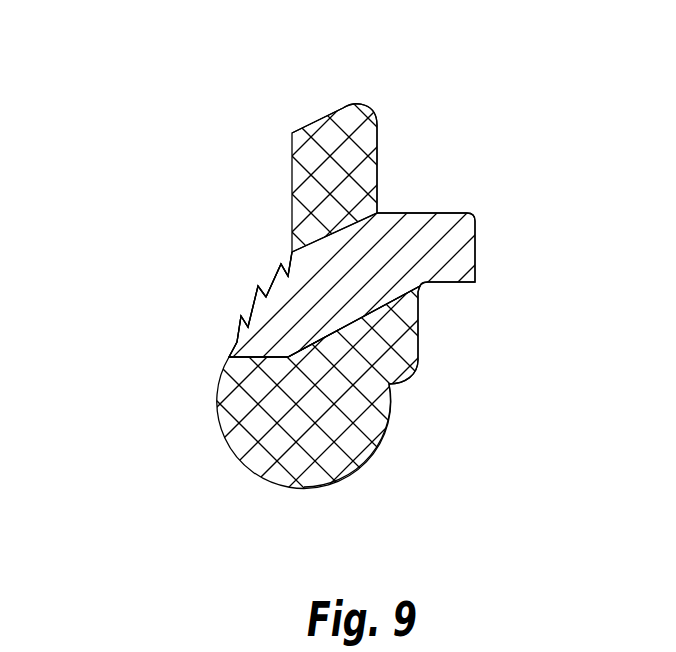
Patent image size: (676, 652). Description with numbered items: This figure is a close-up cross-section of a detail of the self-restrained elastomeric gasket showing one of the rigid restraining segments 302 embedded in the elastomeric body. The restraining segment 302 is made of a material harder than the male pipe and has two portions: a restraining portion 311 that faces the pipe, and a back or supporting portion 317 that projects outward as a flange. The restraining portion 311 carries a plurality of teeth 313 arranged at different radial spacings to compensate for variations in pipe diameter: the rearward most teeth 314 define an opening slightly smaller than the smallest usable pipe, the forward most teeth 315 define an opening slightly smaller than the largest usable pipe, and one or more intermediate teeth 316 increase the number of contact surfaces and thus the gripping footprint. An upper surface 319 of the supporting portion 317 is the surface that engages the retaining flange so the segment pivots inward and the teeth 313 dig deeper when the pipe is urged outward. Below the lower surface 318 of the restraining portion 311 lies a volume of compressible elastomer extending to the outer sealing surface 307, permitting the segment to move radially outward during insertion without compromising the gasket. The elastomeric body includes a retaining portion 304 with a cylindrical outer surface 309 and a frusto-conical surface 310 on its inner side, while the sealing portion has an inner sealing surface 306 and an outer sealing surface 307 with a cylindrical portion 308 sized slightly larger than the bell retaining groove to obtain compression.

The restraining segment 302 is at (457, 234).
The retaining portion 304 is at (358, 147).
The inner sealing surface 306 is at (217, 428).
The outer sealing surface 307 is at (392, 433).
The cylindrical portion 308 is at (420, 310).
The cylindrical outer surface 309 is at (379, 150).
The frusto-conical surface 310 is at (322, 112).
The restraining portion 311 is at (320, 306).
The teeth 313 is at (108, 133).
The rearward most teeth 314 is at (229, 353).
The forward most teeth 315 is at (281, 264).
The intermediate teeth 316 is at (241, 316).
The supporting portion 317 is at (458, 251).
The lower surface 318 is at (312, 353).
The upper surface 319 is at (452, 210).